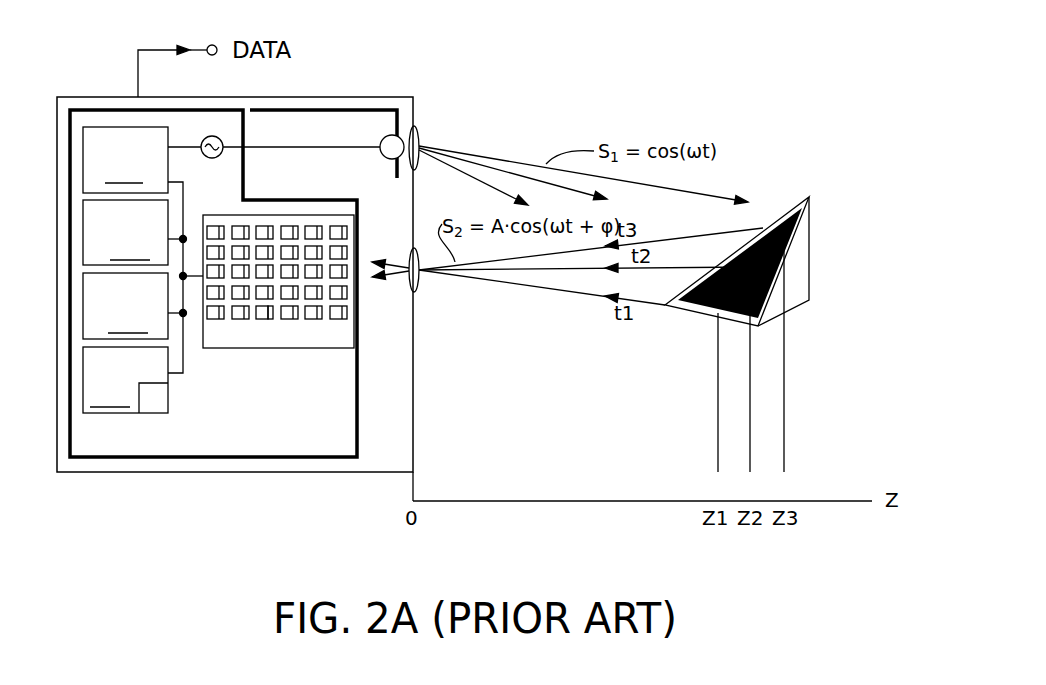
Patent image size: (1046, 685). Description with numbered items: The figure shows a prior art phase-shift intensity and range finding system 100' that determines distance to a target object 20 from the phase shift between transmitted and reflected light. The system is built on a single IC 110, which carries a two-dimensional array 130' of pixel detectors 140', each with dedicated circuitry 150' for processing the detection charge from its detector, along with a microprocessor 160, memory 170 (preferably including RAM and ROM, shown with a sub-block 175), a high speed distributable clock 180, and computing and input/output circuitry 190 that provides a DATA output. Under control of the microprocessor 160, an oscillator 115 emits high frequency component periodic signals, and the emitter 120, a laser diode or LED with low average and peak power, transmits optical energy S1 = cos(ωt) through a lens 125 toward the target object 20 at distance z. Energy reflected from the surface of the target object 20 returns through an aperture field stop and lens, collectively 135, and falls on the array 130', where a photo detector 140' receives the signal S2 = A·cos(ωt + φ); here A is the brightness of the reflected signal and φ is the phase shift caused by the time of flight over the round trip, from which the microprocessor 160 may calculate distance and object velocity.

The system 100' is at (235, 237).
The IC 110 is at (345, 198).
The oscillator 115 is at (212, 136).
The emitter 120 is at (380, 142).
The lens 125 is at (423, 145).
The array 130' is at (271, 276).
The aperture field stop and lens 135 is at (423, 278).
The pixel detector 140' is at (300, 344).
The dedicated circuitry 150' is at (242, 344).
The microprocessor 160 is at (125, 232).
The memory 170 is at (125, 396).
The software routine in memory 175 is at (158, 408).
The clock 180 is at (125, 306).
The input/output circuitry 190 is at (125, 160).
The target object 20 is at (828, 212).